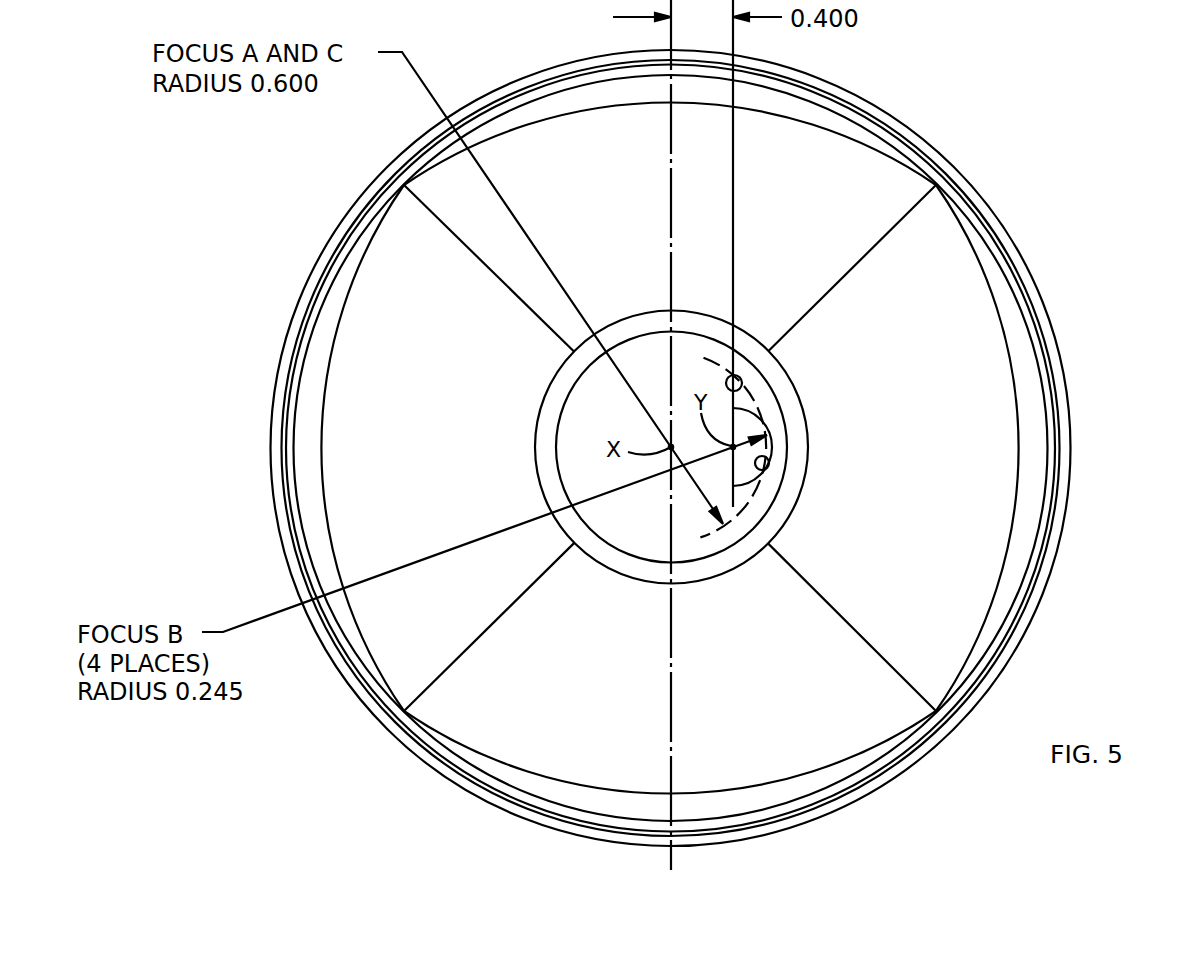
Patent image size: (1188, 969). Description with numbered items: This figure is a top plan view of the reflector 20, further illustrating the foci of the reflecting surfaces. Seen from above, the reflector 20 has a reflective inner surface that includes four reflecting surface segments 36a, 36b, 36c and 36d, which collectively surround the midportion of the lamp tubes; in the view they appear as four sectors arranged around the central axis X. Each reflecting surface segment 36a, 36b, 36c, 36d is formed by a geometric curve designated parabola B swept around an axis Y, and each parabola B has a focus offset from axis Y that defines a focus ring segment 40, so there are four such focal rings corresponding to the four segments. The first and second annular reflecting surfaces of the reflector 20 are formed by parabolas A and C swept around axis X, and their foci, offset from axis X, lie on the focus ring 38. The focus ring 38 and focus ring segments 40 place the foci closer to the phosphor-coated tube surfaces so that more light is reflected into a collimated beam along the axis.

The reflector 20 is at (1060, 352).
The reflecting surface segment 36a is at (904, 416).
The reflecting surface segment 36b is at (618, 209).
The reflecting surface segment 36c is at (450, 416).
The reflecting surface segment 36d is at (620, 684).
The focus ring 38 is at (909, 320).
The focus ring segment 40 is at (939, 492).